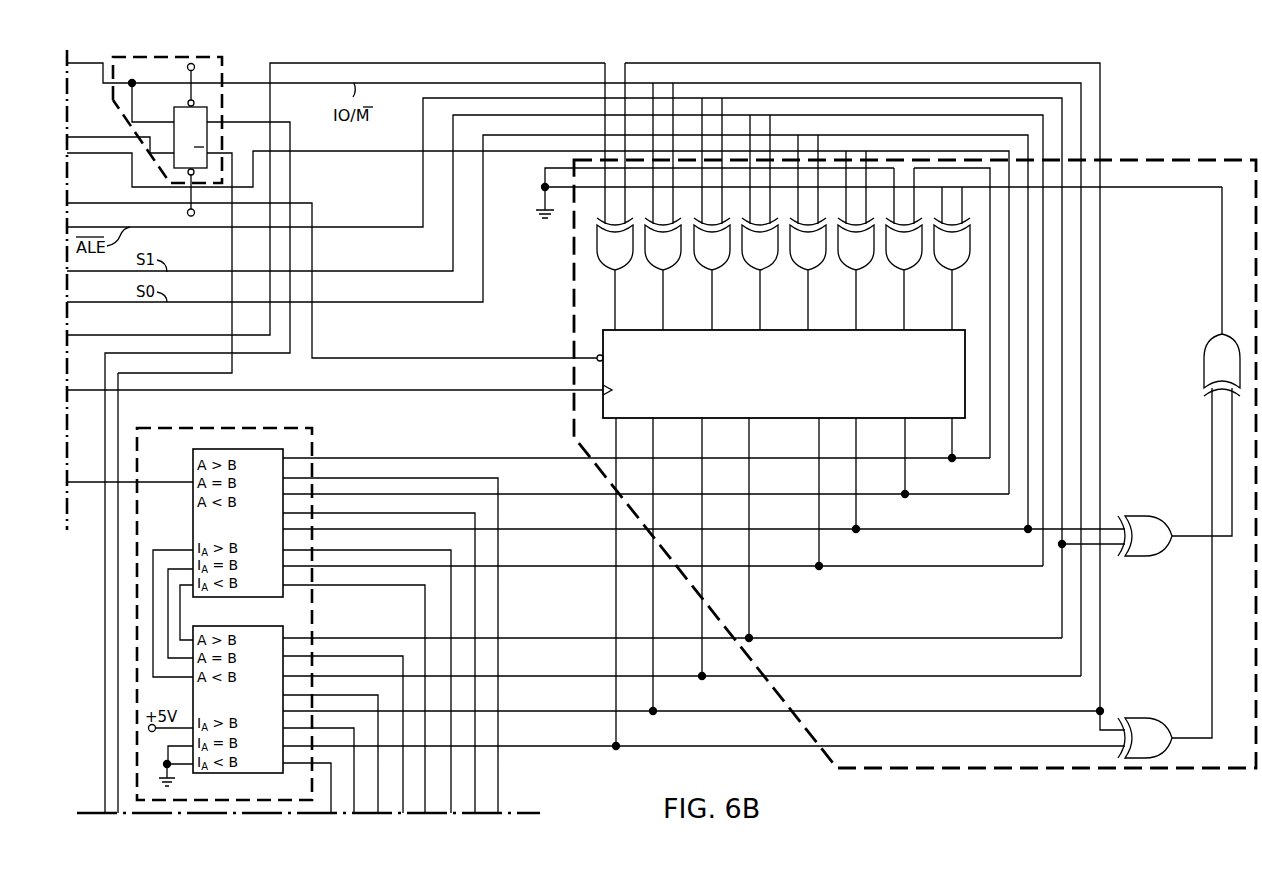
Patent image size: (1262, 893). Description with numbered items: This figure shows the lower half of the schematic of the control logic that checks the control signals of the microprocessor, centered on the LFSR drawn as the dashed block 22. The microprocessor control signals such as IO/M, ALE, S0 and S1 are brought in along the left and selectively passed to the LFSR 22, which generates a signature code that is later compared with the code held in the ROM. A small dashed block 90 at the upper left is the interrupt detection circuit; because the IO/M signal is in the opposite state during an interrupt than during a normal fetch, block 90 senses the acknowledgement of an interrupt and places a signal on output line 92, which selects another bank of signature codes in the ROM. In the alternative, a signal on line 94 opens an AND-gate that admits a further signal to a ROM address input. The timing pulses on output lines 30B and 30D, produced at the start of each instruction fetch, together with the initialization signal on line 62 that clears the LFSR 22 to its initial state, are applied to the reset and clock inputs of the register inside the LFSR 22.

The interrupt detection block 90 is at (222, 104).
The LFSR 22 is at (1184, 158).
The output line 92 is at (232, 248).
The line 94 is at (135, 335).
The line 62 is at (335, 282).
The output line 30B is at (427, 358).
The output line 30D is at (446, 390).